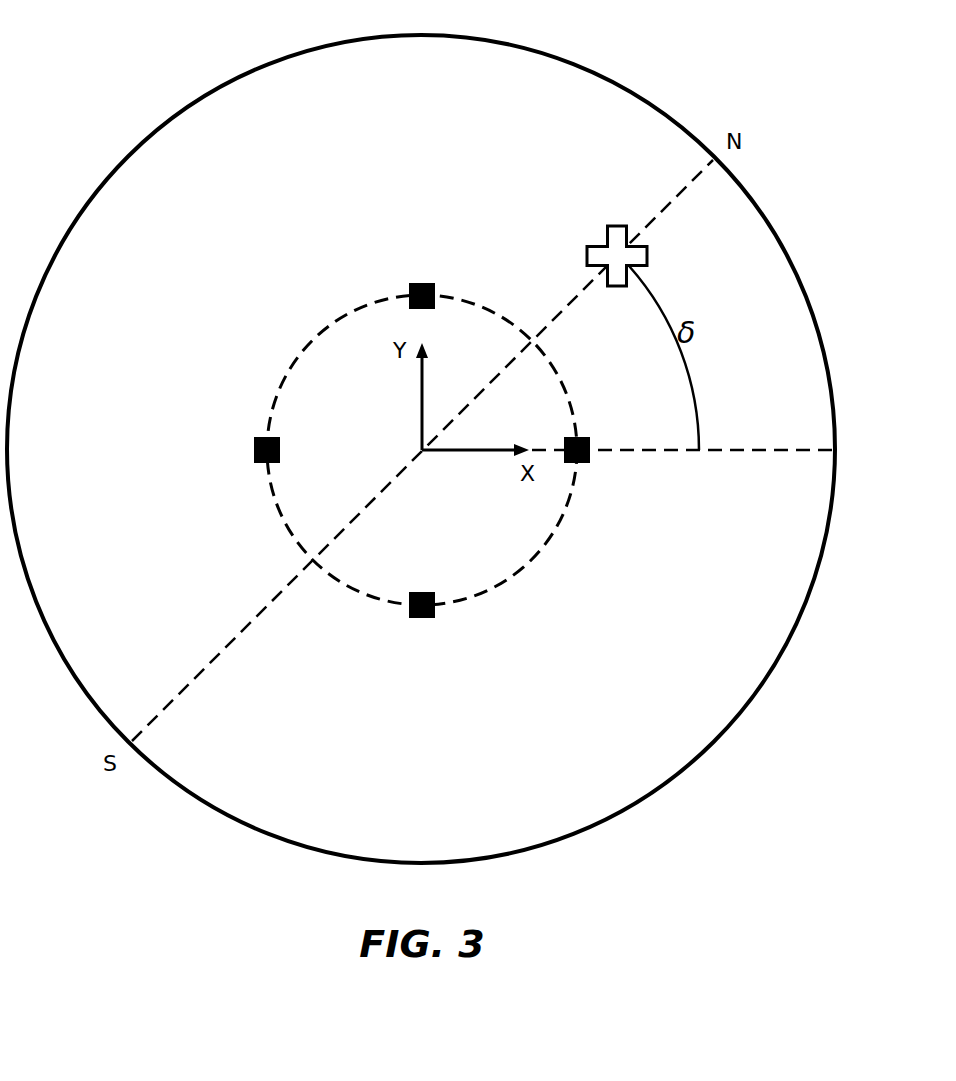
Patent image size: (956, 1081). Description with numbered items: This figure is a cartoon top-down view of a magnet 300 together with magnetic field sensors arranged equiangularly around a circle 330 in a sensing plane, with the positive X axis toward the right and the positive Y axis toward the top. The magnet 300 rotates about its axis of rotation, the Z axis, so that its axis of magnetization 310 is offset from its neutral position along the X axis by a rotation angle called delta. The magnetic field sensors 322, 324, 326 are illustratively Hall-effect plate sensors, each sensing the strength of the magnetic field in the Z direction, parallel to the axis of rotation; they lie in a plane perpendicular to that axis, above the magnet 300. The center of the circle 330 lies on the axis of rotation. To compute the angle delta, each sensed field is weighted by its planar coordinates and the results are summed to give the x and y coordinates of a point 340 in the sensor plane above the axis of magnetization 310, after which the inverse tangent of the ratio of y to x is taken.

The magnet 300 is at (245, 75).
The axis of magnetization 310 is at (239, 633).
The magnetic field sensor 322 is at (418, 283).
The magnetic field sensor 324 is at (254, 450).
The magnetic field sensor 326 is at (579, 464).
The circle 330 is at (331, 323).
The point 340 is at (617, 226).